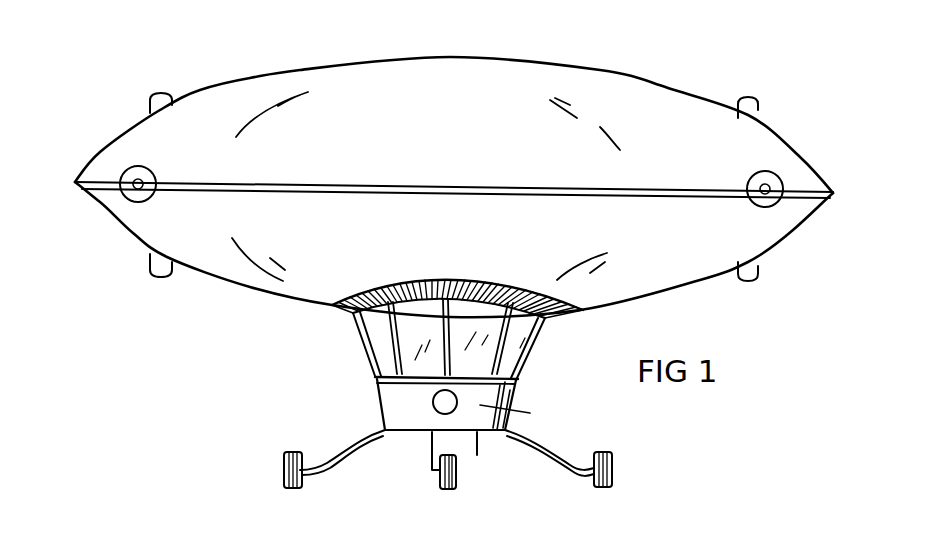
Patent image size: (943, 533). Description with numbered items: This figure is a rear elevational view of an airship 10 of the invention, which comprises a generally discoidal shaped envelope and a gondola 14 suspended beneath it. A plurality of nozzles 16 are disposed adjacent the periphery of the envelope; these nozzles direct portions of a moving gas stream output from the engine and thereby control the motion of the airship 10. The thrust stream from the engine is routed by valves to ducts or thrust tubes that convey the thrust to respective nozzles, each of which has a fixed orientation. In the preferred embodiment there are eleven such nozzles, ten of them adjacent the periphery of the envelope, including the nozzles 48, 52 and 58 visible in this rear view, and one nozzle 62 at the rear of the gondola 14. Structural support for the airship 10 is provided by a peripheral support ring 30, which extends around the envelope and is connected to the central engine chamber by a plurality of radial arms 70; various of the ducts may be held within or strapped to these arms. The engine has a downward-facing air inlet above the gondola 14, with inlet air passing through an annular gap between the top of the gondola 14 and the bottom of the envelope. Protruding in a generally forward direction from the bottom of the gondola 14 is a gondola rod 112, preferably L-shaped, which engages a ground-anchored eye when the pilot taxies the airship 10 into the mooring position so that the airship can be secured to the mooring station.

The airship 10 is at (220, 316).
The gondola 14 is at (490, 395).
The nozzles 16 is at (172, 97).
The peripheral support ring 30 is at (105, 190).
The nozzle 48 is at (148, 102).
The nozzle 52 is at (160, 277).
The nozzle 58 is at (122, 175).
The nozzle 62 is at (458, 404).
The radial arms 70 is at (668, 88).
The gondola rod 112 is at (478, 450).